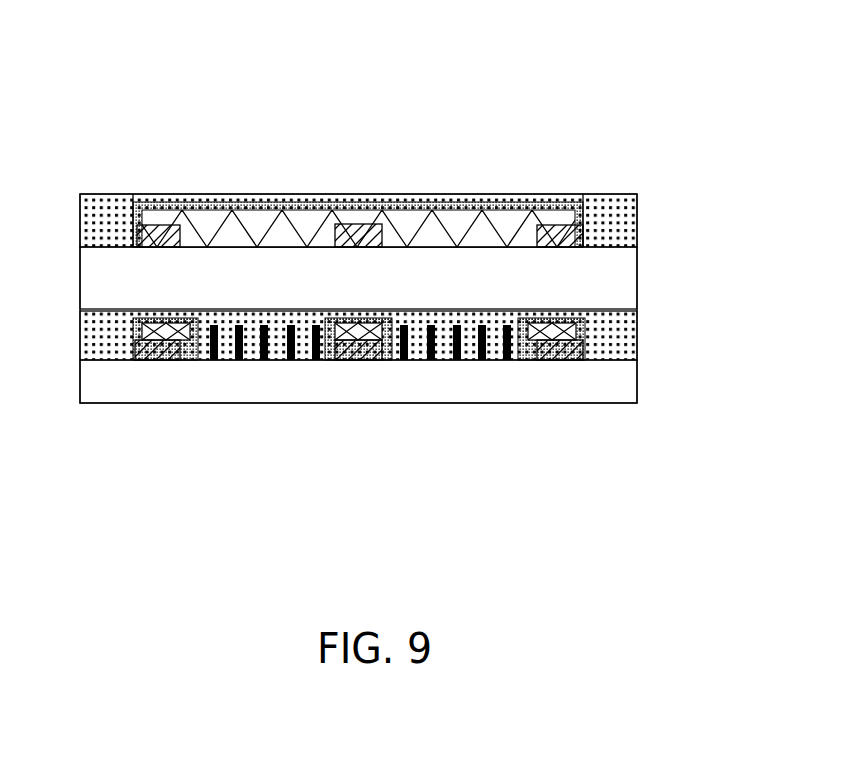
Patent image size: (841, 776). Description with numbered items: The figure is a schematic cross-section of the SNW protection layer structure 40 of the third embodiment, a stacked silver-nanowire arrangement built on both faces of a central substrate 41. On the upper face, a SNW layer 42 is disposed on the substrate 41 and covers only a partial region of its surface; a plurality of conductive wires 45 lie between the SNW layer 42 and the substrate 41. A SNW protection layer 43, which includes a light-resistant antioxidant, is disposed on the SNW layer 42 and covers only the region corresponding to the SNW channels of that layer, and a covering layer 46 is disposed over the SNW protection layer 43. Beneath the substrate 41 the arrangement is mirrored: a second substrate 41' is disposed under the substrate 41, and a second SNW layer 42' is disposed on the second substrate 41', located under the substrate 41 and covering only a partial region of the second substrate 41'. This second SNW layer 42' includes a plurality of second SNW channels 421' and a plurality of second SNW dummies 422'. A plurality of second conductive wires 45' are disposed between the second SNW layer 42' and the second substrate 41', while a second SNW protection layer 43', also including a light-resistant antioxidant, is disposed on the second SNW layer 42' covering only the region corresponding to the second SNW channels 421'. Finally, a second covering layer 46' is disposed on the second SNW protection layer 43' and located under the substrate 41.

The SNW protection layer structure 40 is at (67, 72).
The substrate 41 is at (399, 278).
The SNW layer 42 is at (413, 199).
The SNW protection layer 43 is at (426, 183).
The conductive wires 45 is at (373, 232).
The covering layer 46 is at (399, 215).
The second substrate 41' is at (402, 404).
The second SNW layer 42' is at (433, 335).
The second SNW protection layer 43' is at (429, 304).
The second conductive wires 45' is at (430, 395).
The second covering layer 46' is at (402, 347).
The second SNW channels 421' is at (332, 384).
The second SNW dummies 422' is at (360, 388).